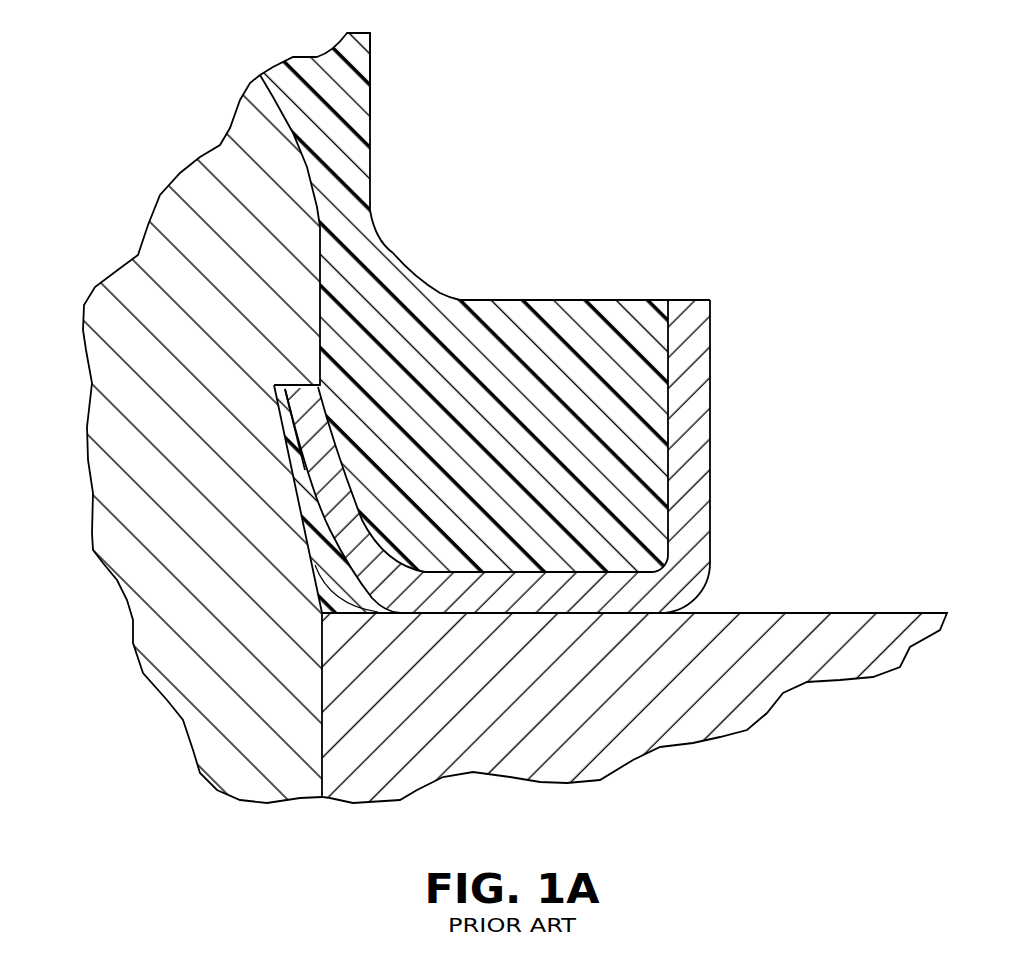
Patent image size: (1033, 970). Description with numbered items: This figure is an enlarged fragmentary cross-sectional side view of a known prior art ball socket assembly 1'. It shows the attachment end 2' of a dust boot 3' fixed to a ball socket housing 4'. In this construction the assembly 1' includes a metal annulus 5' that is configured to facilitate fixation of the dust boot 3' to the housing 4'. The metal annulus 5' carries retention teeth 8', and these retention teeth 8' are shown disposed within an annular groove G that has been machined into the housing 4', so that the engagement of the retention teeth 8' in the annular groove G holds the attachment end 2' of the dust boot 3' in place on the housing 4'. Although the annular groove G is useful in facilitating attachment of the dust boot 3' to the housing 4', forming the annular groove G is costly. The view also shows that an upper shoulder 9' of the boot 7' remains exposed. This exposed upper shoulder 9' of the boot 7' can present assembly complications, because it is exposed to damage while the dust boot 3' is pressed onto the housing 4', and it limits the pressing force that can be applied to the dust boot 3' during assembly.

The ball socket assembly 1' is at (717, 59).
The attachment end 2' is at (634, 719).
The dust boot 3' is at (403, 68).
The ball socket housing 4' is at (185, 439).
The metal annulus 5' is at (530, 456).
The boot 7' is at (485, 323).
The retention teeth 8' is at (398, 422).
The upper shoulder 9' is at (636, 263).
The annular groove G is at (287, 390).